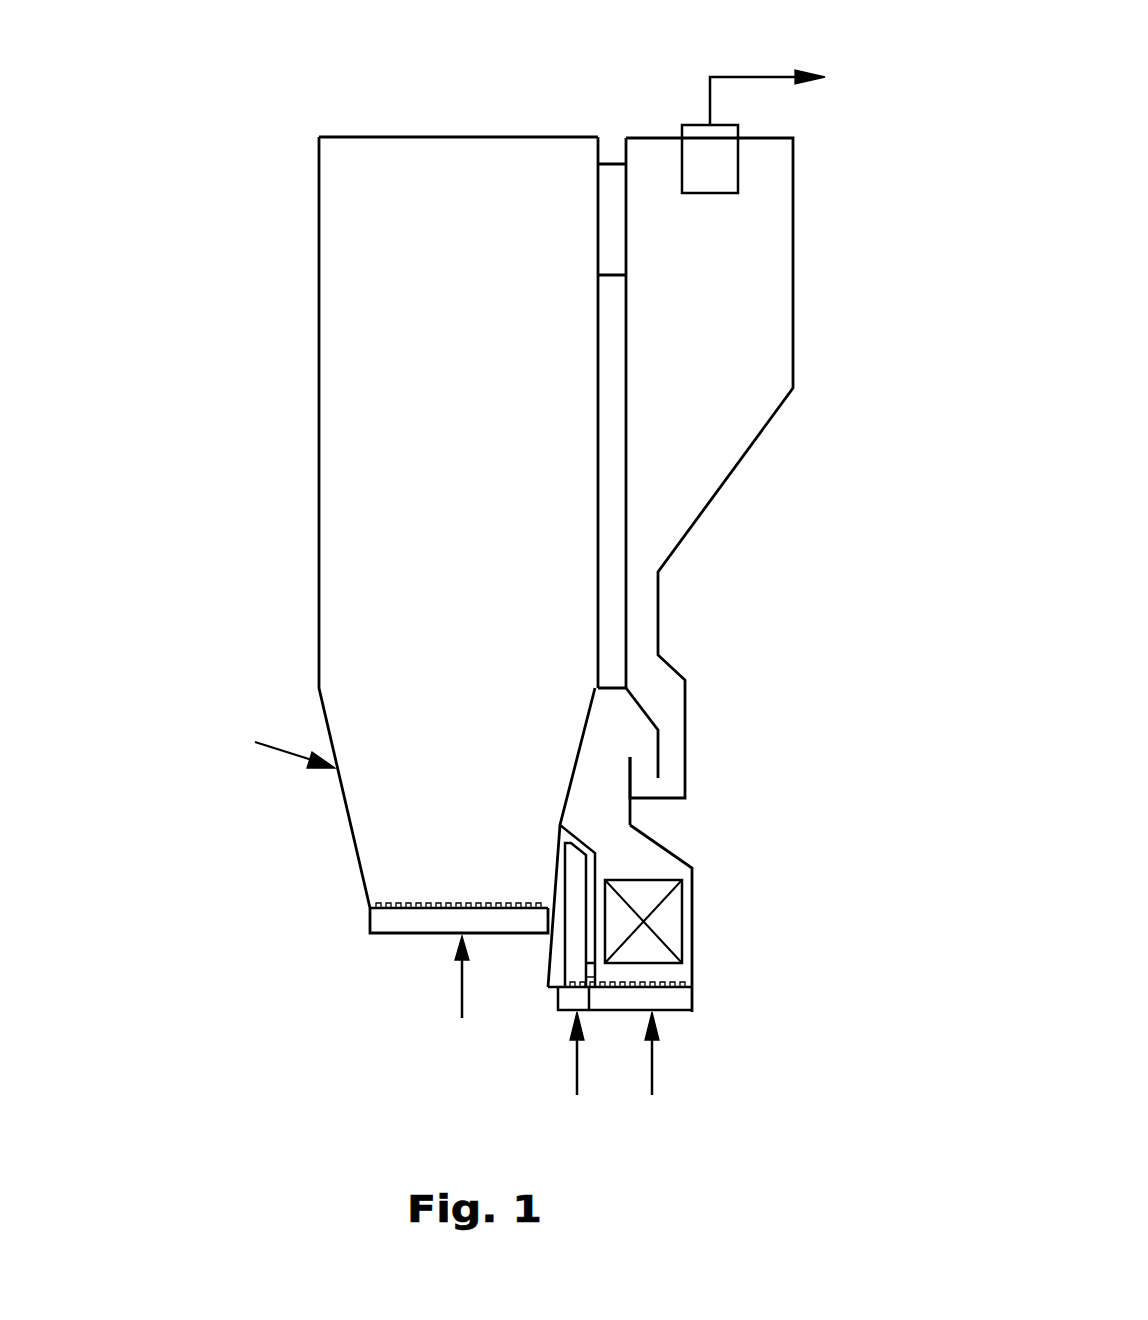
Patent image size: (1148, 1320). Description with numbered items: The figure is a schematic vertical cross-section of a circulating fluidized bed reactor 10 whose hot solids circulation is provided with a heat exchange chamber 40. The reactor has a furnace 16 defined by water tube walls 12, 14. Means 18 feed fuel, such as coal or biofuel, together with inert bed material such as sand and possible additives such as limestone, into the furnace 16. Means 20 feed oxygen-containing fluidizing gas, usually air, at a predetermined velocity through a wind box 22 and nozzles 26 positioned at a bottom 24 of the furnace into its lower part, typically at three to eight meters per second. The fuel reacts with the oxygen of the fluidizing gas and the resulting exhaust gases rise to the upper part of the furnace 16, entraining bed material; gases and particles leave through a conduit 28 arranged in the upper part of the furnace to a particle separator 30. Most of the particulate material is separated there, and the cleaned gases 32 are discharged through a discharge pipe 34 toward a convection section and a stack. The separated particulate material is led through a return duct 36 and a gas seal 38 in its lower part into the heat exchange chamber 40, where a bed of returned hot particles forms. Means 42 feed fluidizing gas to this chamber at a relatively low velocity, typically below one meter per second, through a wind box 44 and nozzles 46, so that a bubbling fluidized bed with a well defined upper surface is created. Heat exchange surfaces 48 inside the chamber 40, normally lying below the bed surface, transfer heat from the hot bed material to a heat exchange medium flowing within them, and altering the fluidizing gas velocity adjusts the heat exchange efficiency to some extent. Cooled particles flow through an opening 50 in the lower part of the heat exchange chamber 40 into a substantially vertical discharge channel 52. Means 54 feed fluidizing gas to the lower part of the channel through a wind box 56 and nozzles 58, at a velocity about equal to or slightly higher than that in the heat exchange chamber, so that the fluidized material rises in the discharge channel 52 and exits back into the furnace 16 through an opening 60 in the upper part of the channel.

The circulating fluidized bed reactor 10 is at (188, 421).
The water tube wall 12 is at (318, 600).
The water tube wall 14 is at (596, 604).
The furnace 16 is at (483, 466).
The means for feeding fuel 18 is at (298, 758).
The means for feeding fluidizing gas 20 is at (458, 992).
The wind box 22 is at (435, 927).
The bottom of the furnace 24 is at (392, 907).
The nozzles for fluidizing gas 26 is at (405, 902).
The conduit 28 is at (608, 180).
The particle separator 30 is at (733, 336).
The cleaned gases 32 is at (743, 78).
The discharge pipe 34 is at (738, 165).
The return duct 36 is at (647, 636).
The gas seal 38 is at (673, 770).
The heat exchange chamber 40 is at (678, 870).
The means for feeding fluidizing gas 42 is at (655, 1070).
The wind box 44 is at (678, 1007).
The nozzles 46 is at (690, 985).
The heat exchange surfaces 48 is at (672, 913).
The opening 50 is at (590, 975).
The discharge channel 52 is at (574, 890).
The means for feeding fluidizing gas 54 is at (577, 1068).
The wind box 56 is at (570, 1006).
The nozzles 58 is at (567, 978).
The opening 60 is at (560, 857).